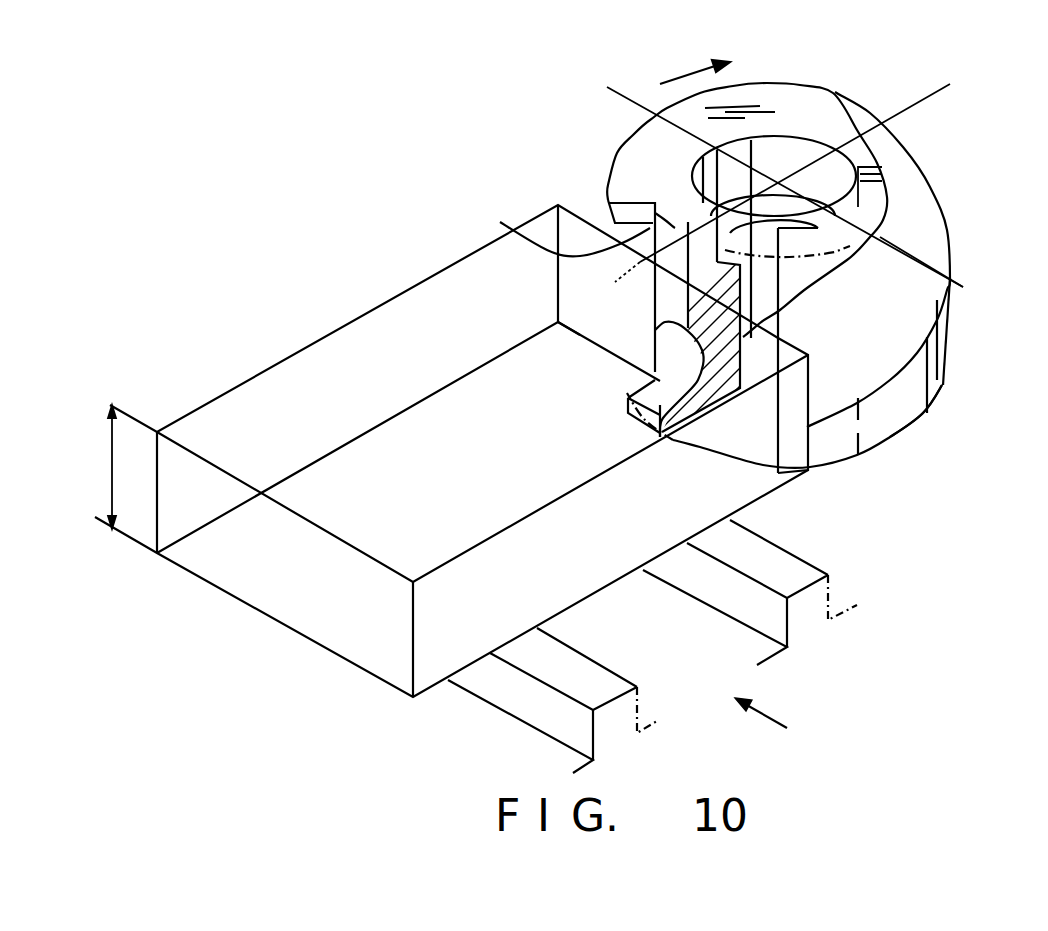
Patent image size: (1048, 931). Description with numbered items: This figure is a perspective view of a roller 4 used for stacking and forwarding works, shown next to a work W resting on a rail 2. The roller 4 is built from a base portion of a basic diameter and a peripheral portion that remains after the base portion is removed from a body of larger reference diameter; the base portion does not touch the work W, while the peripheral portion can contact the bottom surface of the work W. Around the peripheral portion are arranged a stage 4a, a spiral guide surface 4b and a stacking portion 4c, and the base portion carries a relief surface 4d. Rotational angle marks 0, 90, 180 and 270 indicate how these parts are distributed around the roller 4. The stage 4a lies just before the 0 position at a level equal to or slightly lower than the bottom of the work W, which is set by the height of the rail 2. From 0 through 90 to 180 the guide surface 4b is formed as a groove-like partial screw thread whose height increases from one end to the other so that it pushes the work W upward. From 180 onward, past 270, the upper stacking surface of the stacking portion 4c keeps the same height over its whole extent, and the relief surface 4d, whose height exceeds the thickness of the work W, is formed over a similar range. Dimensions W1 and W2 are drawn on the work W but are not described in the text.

The work W is at (278, 370).
The workpiece width W1 is at (592, 348).
The workpiece thickness W2 is at (84, 467).
The rail 2 is at (795, 548).
The roller 4 is at (870, 86).
The stage 4a is at (628, 416).
The guide surface 4b is at (885, 342).
The stacking portion 4c is at (790, 90).
The relief surface 4d is at (500, 236).
The 0° rotational angle 0 is at (620, 288).
The 90° rotational angle 90 is at (952, 275).
The 180° rotational angle 180 is at (830, 162).
The 270° rotational angle 270 is at (761, 176).